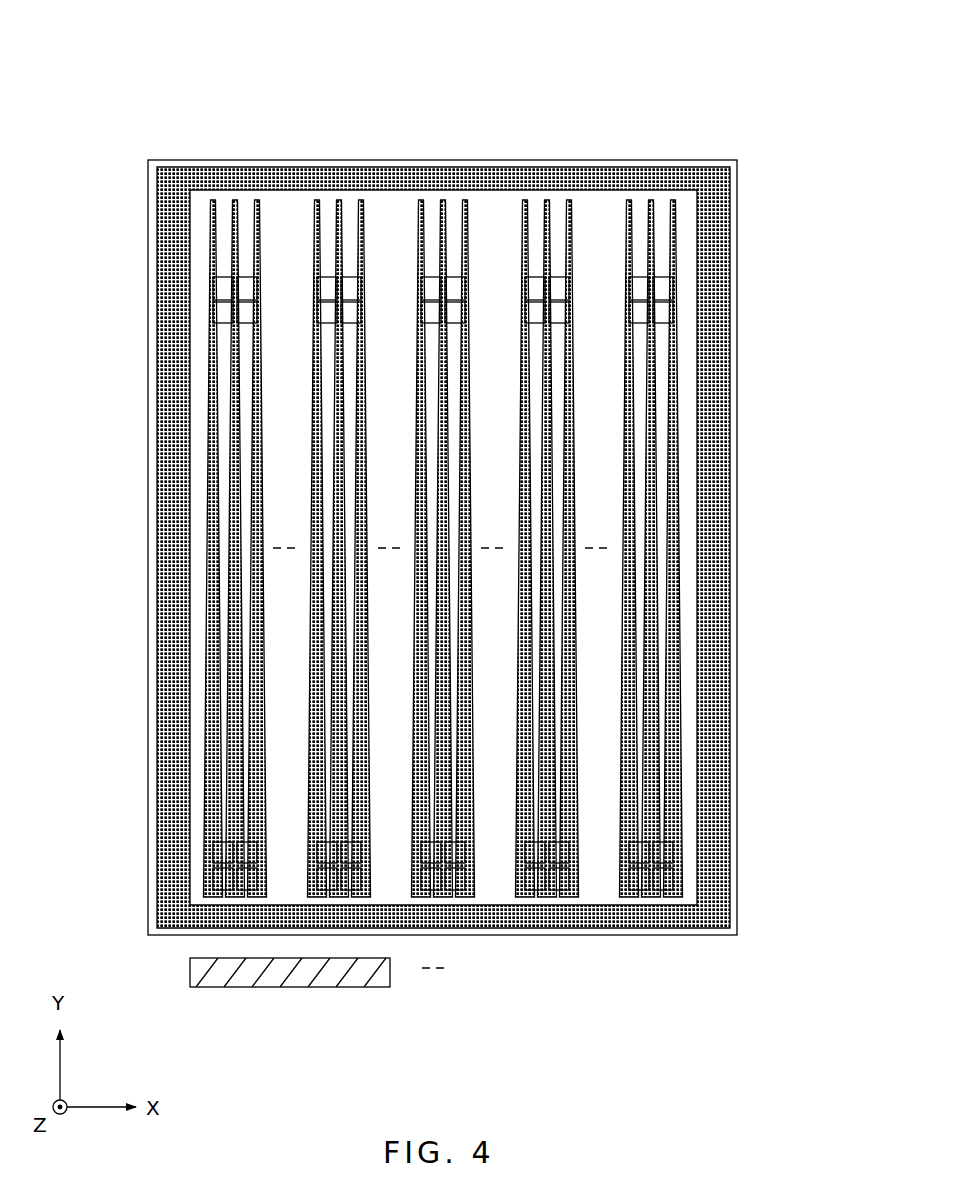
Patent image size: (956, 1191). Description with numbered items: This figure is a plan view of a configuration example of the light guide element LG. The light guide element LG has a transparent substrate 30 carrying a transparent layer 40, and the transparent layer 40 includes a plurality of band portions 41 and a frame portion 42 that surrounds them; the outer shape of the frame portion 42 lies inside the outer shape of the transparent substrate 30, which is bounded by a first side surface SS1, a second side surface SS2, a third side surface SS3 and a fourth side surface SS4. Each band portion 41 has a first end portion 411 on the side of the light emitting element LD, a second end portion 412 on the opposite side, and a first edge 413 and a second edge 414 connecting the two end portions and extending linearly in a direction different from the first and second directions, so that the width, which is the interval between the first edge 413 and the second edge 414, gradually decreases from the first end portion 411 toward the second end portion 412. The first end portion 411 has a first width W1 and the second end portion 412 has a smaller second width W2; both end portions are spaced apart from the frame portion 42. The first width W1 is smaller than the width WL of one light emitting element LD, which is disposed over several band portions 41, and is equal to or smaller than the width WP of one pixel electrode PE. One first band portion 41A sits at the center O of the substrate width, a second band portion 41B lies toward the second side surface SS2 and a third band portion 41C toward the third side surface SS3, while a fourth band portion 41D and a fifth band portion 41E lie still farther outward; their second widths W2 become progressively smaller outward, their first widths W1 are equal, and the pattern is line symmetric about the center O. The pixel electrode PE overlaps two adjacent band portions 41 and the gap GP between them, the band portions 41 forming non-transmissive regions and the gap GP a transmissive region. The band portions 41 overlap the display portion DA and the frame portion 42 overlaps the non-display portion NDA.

The transparent substrate 30 is at (738, 275).
The transparent layer 40 is at (713, 184).
The band portion 41 is at (680, 535).
The first band portion 41A is at (467, 248).
The second band portion 41B is at (363, 248).
The third band portion 41C is at (571, 248).
The fourth band portion 41D is at (259, 248).
The fifth band portion 41E is at (675, 248).
The frame portion 42 is at (193, 166).
The first end portion 411 is at (307, 903).
The second end portion 412 is at (255, 235).
The first edge 413 is at (428, 462).
The second edge 414 is at (455, 467).
The center O is at (443, 117).
The first width W1 is at (268, 913).
The second width W2 is at (235, 200).
The width of one pixel electrode WP is at (500, 823).
The gap GP is at (355, 391).
The pixel electrode PE is at (562, 840).
The display portion DA is at (702, 461).
The non-display portion NDA is at (722, 491).
The light guide element LG is at (741, 196).
The light emitting element LD is at (190, 976).
The width of one light emitting element WL is at (388, 1013).
The first side surface SS1 is at (723, 937).
The second side surface SS2 is at (150, 590).
The third side surface SS3 is at (740, 572).
The fourth side surface SS4 is at (729, 164).